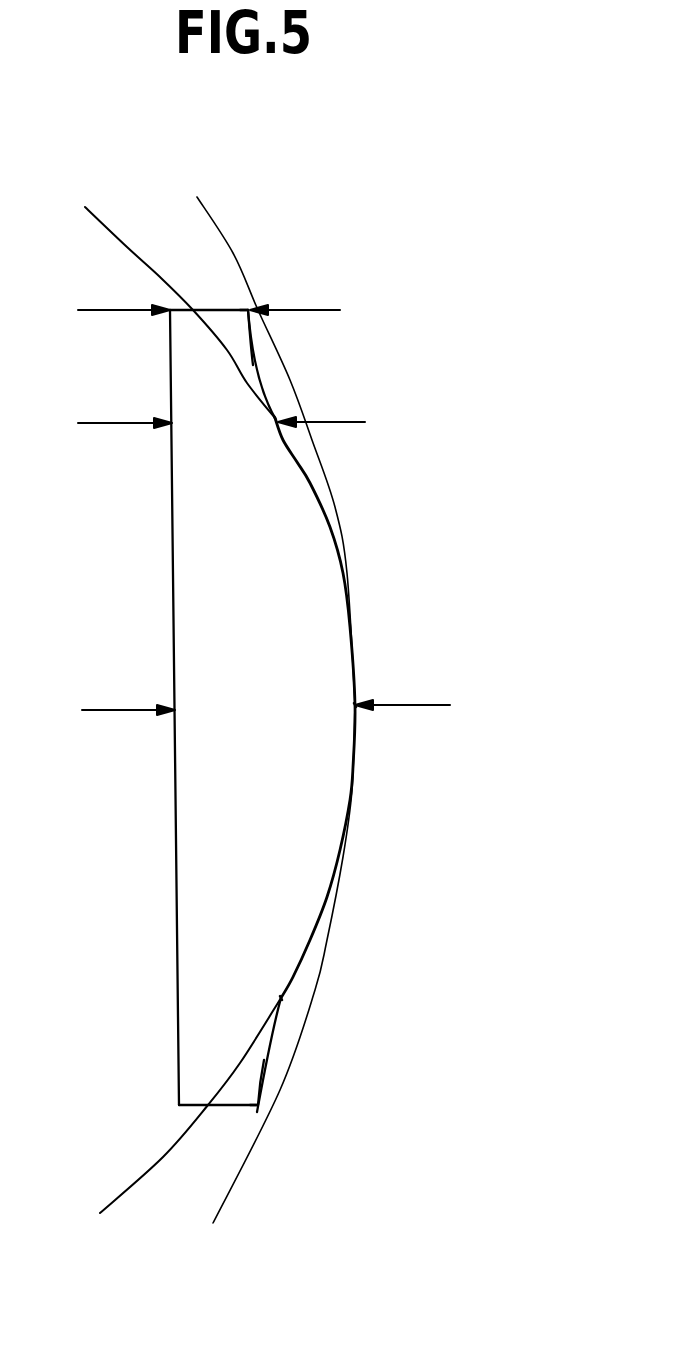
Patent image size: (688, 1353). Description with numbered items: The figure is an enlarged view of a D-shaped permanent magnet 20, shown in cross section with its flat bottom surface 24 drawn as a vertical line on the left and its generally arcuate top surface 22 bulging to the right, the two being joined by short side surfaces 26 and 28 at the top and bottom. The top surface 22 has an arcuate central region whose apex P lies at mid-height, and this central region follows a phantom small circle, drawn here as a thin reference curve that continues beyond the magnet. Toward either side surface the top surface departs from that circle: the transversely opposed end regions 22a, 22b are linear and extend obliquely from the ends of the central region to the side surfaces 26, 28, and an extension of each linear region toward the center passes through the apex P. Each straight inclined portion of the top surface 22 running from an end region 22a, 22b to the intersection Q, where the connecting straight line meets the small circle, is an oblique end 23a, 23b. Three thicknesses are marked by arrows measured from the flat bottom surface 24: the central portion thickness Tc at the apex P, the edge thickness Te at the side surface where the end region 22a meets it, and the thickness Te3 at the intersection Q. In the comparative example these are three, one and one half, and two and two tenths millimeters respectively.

The permanent magnet 20 is at (222, 898).
The generally arcuate top surface 22 is at (330, 897).
The end region 22a is at (248, 310).
The end region 22b is at (272, 1118).
The oblique end 23a is at (258, 352).
The oblique end 23b is at (270, 1053).
The flat bottom surface 24 is at (177, 1005).
The side surface 26 is at (215, 307).
The side surface 28 is at (230, 1105).
The apex P is at (357, 703).
The intersection Q is at (275, 418).
The edge thickness Te is at (308, 310).
The thickness at intersection Q Te3 is at (341, 423).
The central portion thickness Tc is at (416, 706).